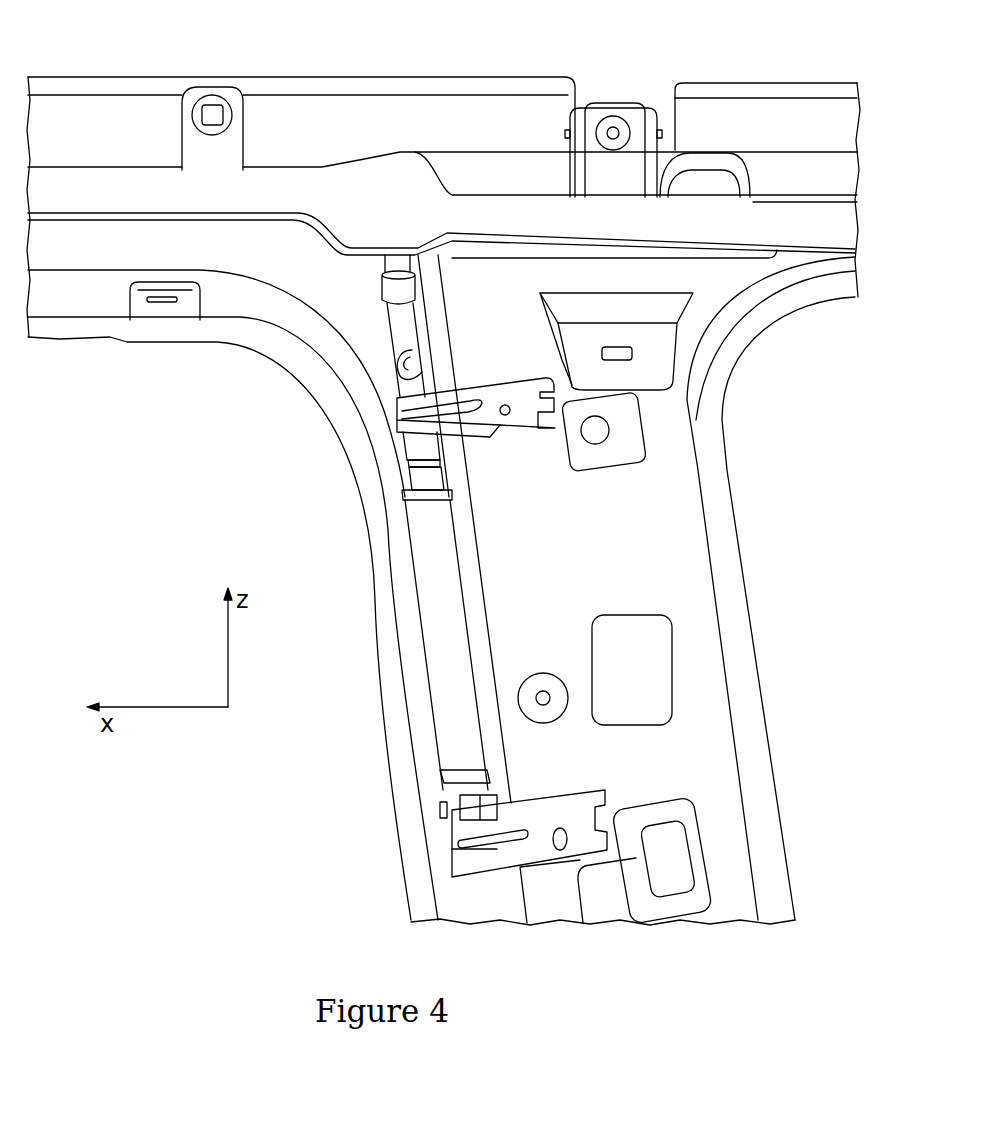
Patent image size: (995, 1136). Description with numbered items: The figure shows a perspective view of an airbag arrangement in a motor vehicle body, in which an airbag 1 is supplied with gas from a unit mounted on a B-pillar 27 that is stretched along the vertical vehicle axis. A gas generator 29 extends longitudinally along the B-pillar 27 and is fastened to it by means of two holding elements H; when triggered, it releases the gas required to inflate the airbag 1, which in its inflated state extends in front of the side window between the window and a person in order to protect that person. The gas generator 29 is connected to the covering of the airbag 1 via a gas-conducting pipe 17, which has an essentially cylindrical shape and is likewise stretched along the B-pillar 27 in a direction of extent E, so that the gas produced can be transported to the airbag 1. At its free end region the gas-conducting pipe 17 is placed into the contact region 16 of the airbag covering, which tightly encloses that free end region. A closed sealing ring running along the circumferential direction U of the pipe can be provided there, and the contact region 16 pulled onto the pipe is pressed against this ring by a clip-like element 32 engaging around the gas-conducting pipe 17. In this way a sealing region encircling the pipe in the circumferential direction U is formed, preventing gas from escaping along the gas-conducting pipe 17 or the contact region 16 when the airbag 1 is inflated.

The airbag 1 is at (488, 213).
The clip-like element 32 is at (393, 293).
The contact region 16 is at (402, 338).
The gas-conducting pipe 17 is at (408, 392).
The B-pillar 27 is at (657, 568).
The gas generator 29 is at (442, 665).
The direction of extent E is at (427, 278).
The circumferential direction U is at (420, 354).
The holding elements H is at (518, 407).